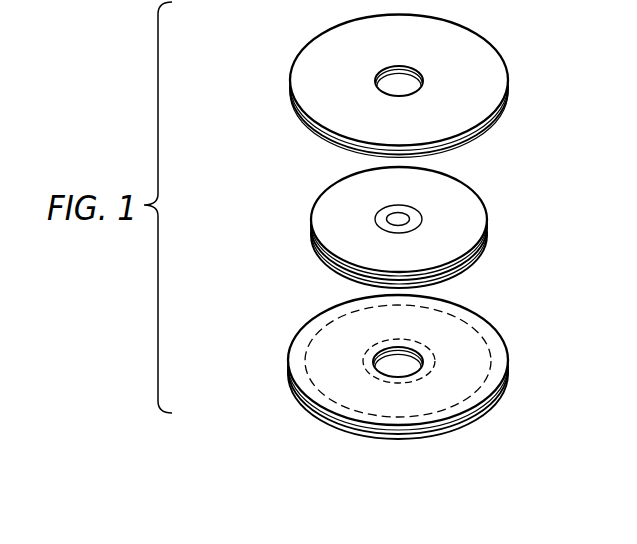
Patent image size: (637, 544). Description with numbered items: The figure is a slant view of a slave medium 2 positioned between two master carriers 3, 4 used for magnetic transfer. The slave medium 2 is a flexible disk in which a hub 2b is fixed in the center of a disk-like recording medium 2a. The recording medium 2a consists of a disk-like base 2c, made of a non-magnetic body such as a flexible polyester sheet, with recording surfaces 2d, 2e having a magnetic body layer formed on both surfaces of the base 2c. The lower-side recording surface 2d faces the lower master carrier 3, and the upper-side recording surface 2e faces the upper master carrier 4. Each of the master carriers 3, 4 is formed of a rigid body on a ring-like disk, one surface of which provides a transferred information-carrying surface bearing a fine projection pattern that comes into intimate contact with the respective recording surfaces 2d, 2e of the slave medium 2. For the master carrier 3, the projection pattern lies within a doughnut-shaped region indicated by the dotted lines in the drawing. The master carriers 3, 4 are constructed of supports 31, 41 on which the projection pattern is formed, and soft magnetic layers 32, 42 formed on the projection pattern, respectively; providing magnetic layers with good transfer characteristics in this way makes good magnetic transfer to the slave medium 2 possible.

The slave medium 2 is at (365, 228).
The recording medium 2a is at (235, 205).
The hub 2b is at (403, 221).
The disk-like base 2c is at (319, 257).
The lower-side recording surface 2d is at (331, 270).
The upper-side recording surface 2e is at (313, 242).
The master carrier 3 is at (393, 367).
The support 31 is at (324, 418).
The soft magnetic layer 32 is at (299, 400).
The master carrier 4 is at (394, 87).
The support 41 is at (304, 124).
The soft magnetic layer 42 is at (329, 143).